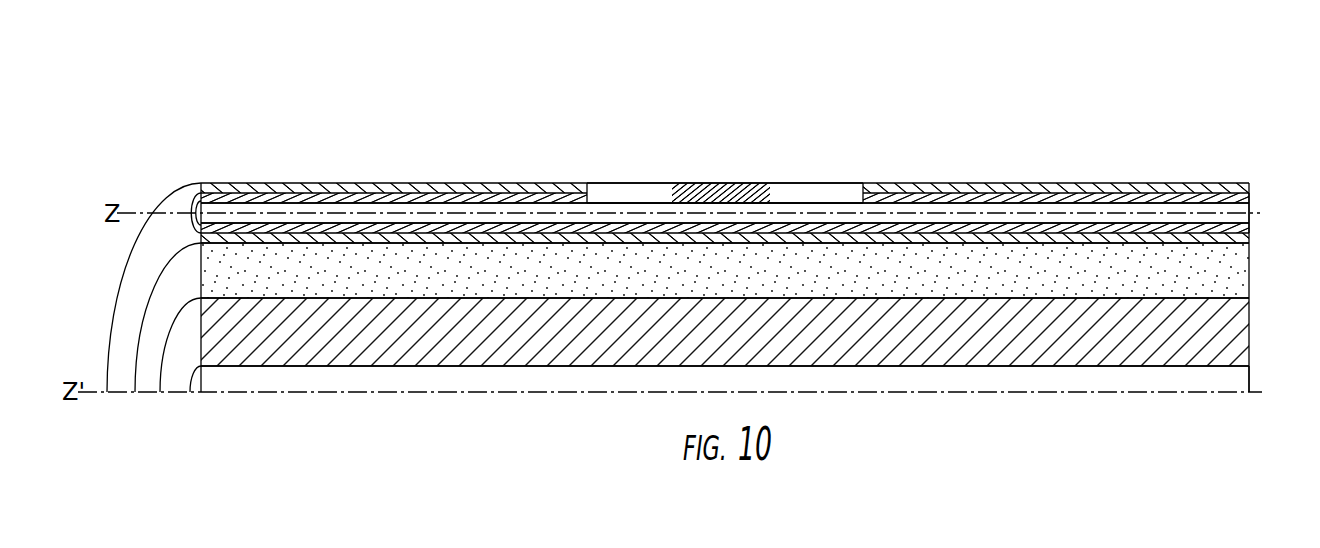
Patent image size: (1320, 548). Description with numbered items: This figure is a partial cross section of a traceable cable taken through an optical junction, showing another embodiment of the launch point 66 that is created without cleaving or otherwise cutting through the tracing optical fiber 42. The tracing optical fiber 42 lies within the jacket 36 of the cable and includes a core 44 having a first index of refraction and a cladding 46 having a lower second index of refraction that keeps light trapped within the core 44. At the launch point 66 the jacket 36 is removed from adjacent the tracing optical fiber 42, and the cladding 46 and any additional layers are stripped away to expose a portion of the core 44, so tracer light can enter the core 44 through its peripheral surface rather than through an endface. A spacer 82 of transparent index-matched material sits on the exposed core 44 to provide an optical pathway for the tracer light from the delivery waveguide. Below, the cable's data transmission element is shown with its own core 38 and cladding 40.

The launch point 66 is at (768, 110).
The jacket 36 is at (353, 237).
The cladding 46 is at (460, 228).
The core 44 is at (495, 207).
The spacer 82 is at (801, 193).
The tracing optical fiber 42 is at (1265, 193).
The cladding 40 is at (715, 346).
The core 38 is at (1243, 380).